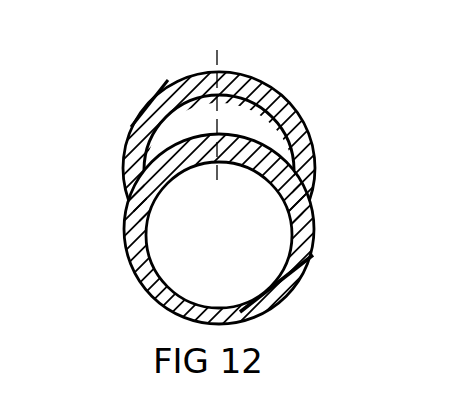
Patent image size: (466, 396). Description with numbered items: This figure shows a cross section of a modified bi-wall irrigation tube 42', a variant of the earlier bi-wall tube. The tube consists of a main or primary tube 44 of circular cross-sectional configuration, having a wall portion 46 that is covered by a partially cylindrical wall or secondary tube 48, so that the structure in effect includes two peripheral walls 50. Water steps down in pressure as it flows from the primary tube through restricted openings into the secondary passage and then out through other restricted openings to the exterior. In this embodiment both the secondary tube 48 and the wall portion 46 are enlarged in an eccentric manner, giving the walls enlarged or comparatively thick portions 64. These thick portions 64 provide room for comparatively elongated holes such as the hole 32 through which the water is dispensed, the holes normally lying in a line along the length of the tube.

The hole 32 is at (205, 82).
The irrigation tube 42' is at (233, 180).
The main or primary tube 44 is at (233, 200).
The wall portion 46 is at (181, 172).
The secondary tube 48 is at (233, 183).
The peripheral wall 50 is at (233, 180).
The thick portion 64 is at (244, 148).